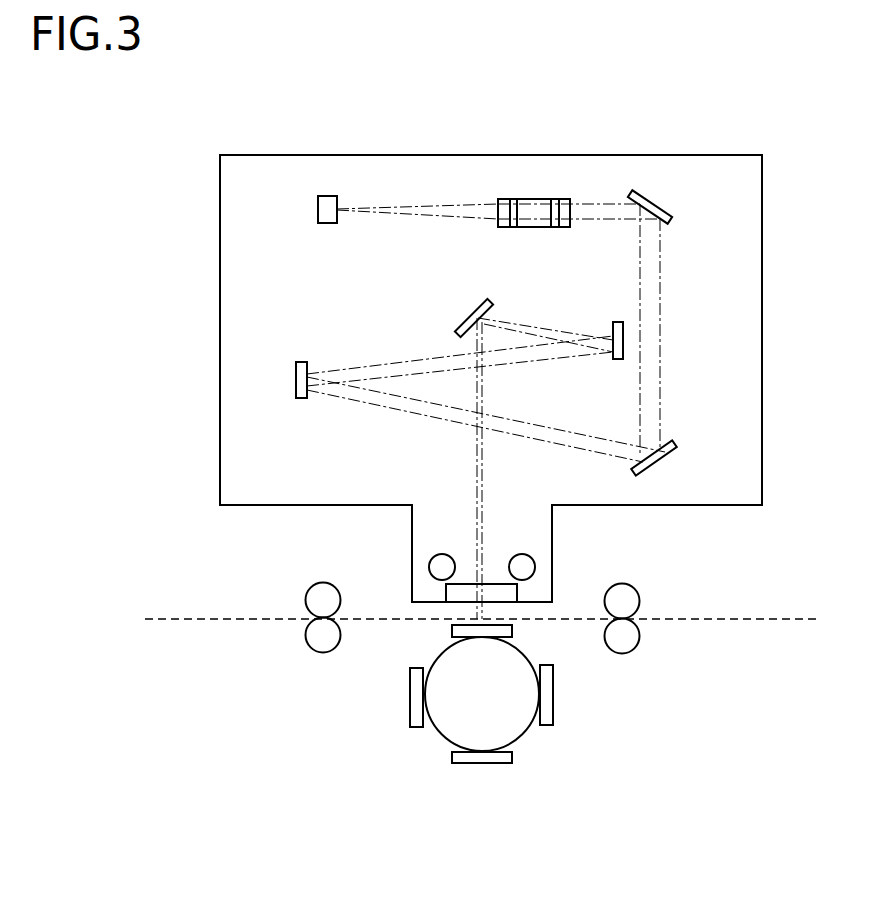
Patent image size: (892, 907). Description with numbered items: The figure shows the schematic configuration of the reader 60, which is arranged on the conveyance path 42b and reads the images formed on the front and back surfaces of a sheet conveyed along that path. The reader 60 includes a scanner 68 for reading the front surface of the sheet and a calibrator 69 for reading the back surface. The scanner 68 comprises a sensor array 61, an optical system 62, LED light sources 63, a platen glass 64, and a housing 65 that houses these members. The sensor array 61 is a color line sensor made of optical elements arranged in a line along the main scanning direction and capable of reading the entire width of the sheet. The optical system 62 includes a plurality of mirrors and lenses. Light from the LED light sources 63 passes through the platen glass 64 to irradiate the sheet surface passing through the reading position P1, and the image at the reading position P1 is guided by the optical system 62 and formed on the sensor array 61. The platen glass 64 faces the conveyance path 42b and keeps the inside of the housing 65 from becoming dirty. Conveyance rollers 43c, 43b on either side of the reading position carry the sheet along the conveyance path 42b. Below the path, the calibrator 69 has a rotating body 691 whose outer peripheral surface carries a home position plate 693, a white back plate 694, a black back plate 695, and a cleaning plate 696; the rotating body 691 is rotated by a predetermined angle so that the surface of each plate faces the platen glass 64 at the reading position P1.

The reader 60 is at (153, 125).
The housing 65 is at (345, 155).
The sensor array 61 is at (327, 224).
The scanner 68 is at (190, 325).
The optical system 62 is at (675, 192).
The LED light sources 63 is at (511, 555).
The platen glass 64 is at (503, 596).
The reading position P1 is at (478, 618).
The conveyance path 42b is at (677, 618).
The conveyance roller 43c is at (318, 655).
The conveyance roller 43b is at (620, 654).
The calibrator 69 is at (573, 775).
The rotating body 691 is at (440, 733).
The home position plate 693 is at (408, 725).
The white back plate 694 is at (513, 628).
The black back plate 695 is at (554, 710).
The cleaning plate 696 is at (455, 763).